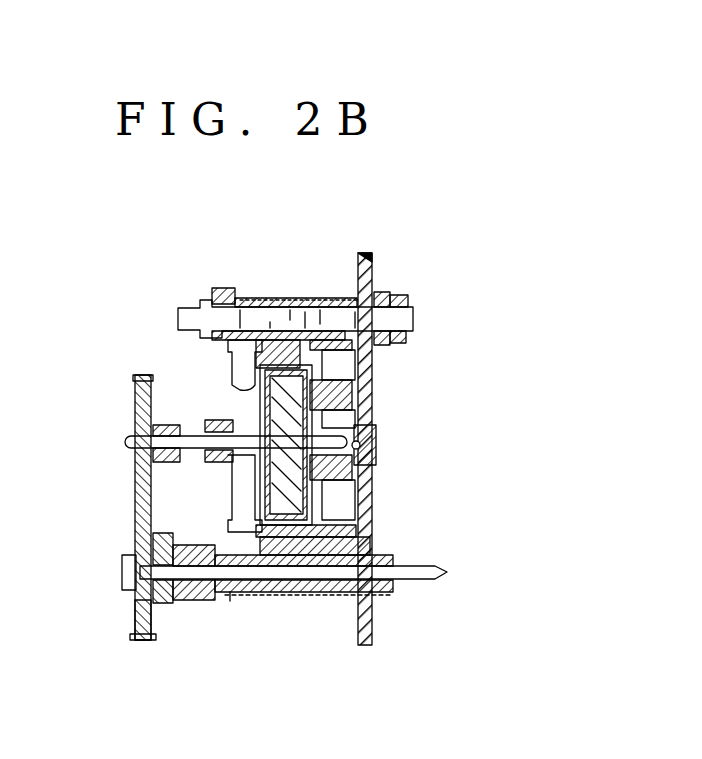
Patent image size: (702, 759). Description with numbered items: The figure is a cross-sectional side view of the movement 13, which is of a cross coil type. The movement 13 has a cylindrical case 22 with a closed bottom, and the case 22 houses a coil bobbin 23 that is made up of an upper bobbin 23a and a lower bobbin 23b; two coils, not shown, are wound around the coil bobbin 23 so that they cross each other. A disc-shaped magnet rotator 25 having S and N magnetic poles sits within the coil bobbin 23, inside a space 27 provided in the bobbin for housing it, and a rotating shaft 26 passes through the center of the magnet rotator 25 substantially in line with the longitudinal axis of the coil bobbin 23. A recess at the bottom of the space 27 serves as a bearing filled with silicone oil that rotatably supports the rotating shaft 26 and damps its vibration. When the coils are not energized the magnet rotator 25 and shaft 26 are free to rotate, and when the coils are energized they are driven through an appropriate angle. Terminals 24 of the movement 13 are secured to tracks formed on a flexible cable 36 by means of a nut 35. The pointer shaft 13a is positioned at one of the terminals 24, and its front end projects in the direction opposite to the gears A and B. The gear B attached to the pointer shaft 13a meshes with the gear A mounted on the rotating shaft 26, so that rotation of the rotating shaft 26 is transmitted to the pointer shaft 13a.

The movement 13 is at (410, 437).
The pointer shaft 13a is at (436, 581).
The cylindrical case 22 is at (217, 287).
The coil bobbin 23 is at (448, 374).
The upper bobbin 23a is at (330, 364).
The lower bobbin 23b is at (315, 390).
The terminals 24 is at (190, 320).
The magnet rotator 25 is at (288, 492).
The rotating shaft 26 is at (196, 438).
The space 27 is at (374, 452).
The nut 35 is at (404, 286).
The flexible cable 36 is at (383, 286).
The gear A is at (140, 477).
The gear B is at (133, 613).